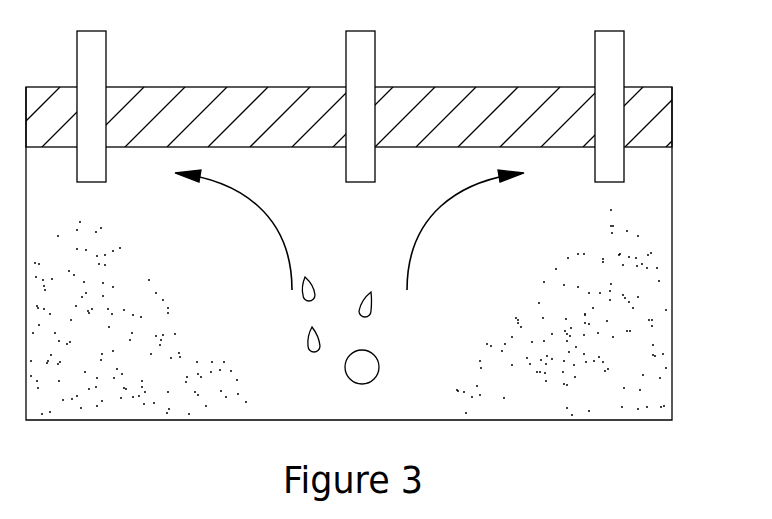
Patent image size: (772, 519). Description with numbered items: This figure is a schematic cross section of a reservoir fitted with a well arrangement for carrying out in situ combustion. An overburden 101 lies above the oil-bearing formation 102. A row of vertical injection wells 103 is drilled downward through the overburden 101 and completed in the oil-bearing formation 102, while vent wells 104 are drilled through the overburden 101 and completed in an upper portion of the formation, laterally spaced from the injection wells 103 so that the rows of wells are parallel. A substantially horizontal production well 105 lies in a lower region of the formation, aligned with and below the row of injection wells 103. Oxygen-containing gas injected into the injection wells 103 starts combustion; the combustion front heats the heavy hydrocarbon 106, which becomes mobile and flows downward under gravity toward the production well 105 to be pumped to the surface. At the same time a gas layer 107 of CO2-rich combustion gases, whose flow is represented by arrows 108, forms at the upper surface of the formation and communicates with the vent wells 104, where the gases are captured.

The overburden 101 is at (648, 115).
The oil-bearing formation 102 is at (643, 300).
The injection wells 103 is at (375, 59).
The vent wells 104 is at (106, 59).
The production well 105 is at (365, 370).
The heavy hydrocarbon 106 is at (313, 293).
The gas layer 107 is at (352, 173).
The arrows 108 is at (252, 213).